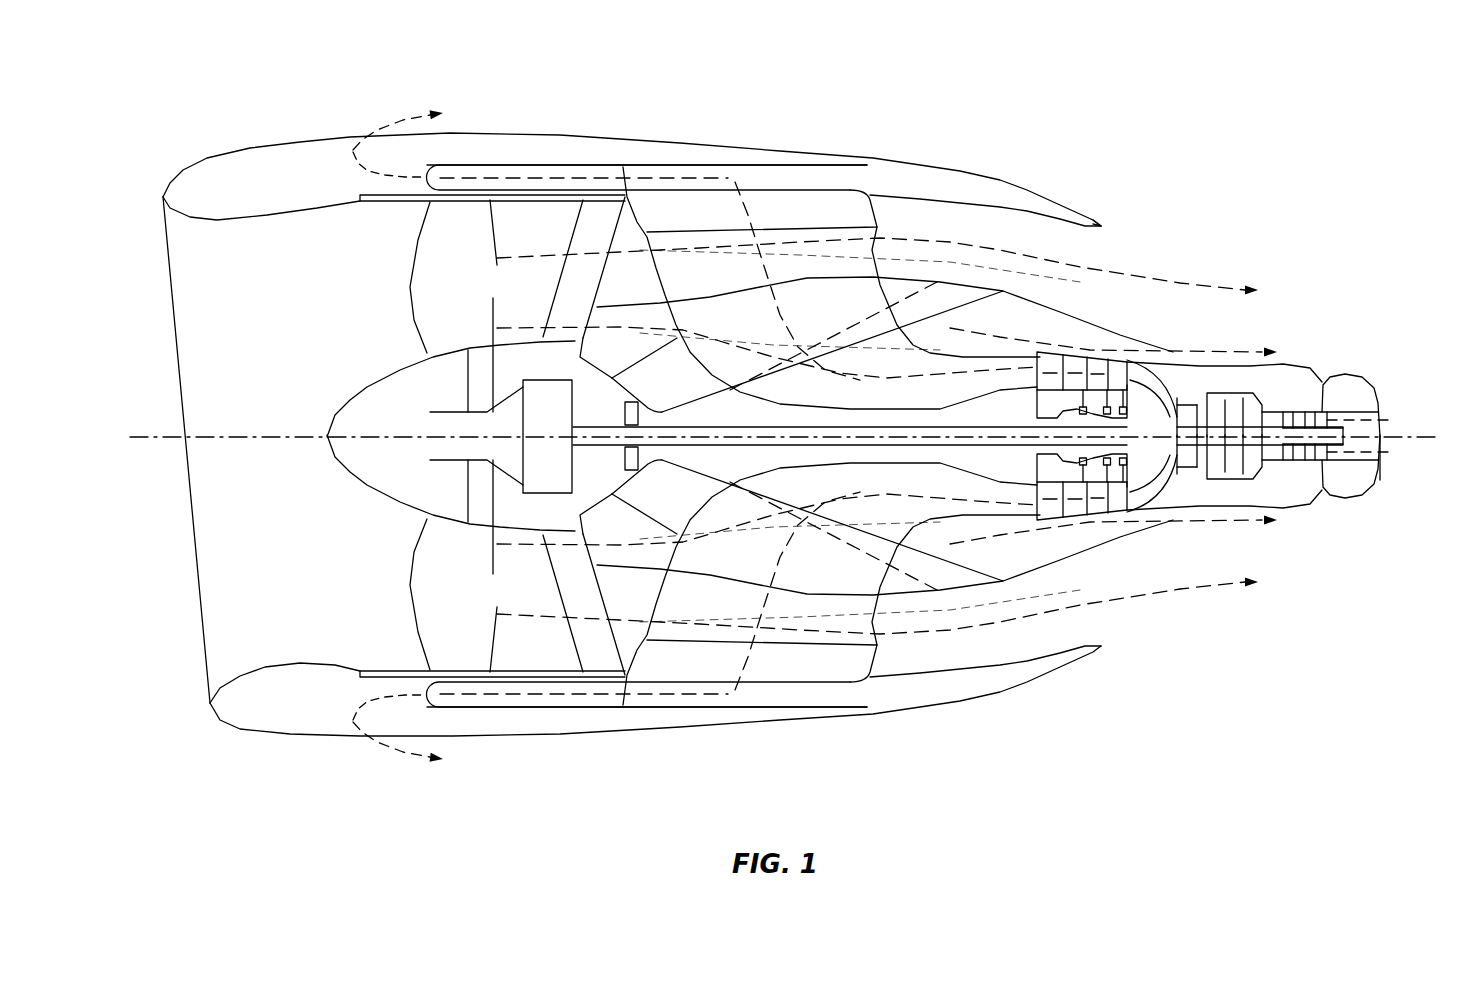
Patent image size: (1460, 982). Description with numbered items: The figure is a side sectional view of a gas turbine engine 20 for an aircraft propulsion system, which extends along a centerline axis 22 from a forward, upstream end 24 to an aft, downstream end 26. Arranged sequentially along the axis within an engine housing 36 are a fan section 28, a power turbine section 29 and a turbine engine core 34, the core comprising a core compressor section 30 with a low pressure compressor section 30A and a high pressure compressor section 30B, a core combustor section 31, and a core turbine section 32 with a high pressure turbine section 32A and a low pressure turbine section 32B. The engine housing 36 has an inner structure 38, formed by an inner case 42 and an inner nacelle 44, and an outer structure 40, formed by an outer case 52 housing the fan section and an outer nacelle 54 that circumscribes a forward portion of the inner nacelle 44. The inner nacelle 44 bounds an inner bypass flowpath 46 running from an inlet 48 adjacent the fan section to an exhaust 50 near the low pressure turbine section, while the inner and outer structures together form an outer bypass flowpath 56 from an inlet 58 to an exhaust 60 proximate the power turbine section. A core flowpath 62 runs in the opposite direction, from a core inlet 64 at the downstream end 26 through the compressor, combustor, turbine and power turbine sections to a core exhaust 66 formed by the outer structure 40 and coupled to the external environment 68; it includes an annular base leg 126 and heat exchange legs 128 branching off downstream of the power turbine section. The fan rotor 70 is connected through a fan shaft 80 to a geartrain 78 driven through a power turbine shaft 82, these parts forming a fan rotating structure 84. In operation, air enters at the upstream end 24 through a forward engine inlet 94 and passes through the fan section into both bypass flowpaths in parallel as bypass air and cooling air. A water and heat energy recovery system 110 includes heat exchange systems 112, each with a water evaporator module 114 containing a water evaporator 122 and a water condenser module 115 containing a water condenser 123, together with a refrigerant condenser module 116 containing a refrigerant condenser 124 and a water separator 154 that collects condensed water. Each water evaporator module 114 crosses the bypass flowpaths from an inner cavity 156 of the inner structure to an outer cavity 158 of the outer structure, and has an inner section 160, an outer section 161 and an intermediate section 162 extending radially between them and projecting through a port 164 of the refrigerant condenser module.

The gas turbine engine 20 is at (205, 118).
The centerline axis 22 is at (135, 450).
The forward upstream end 24 is at (161, 197).
The aft downstream end 26 is at (1380, 392).
The fan section 28 is at (410, 694).
The power turbine section 29 is at (1079, 536).
The core compressor section 30 is at (1372, 585).
The low pressure compressor section 30A is at (1322, 487).
The high pressure compressor section 30B is at (1273, 480).
The core combustor section 31 is at (1236, 492).
The core turbine section 32 is at (1258, 640).
The high pressure turbine section 32A is at (1201, 490).
The low pressure turbine section 32B is at (1184, 490).
The turbine engine core 34 is at (1297, 385).
The engine housing 36 is at (1043, 172).
The housing inner structure 38 is at (1088, 302).
The housing outer structure 40 is at (943, 160).
The inner case 42 is at (1083, 352).
The inner nacelle 44 is at (1040, 297).
The inner bypass flowpath 46 is at (990, 330).
The inner bypass inlet 48 is at (597, 318).
The inner bypass exhaust 50 is at (1180, 348).
The outer case 52 is at (373, 186).
The outer nacelle 54 is at (277, 145).
The outer bypass flowpath 56 is at (925, 232).
The outer bypass inlet 58 is at (597, 248).
The outer bypass exhaust 60 is at (1100, 245).
The core flowpath 62 is at (1178, 390).
The core inlet 64 is at (1393, 410).
The core exhaust 66 is at (353, 150).
The environment 68 is at (649, 104).
The fan rotor 70 is at (465, 493).
The geartrain 78 is at (535, 419).
The fan shaft 80 is at (488, 470).
The power turbine shaft 82 is at (590, 450).
The fan rotating structure 84 is at (405, 408).
The forward engine inlet 94 is at (175, 320).
The water and heat energy recovery system 110 is at (878, 696).
The heat exchange system 112 is at (875, 180).
The water evaporator module 114 is at (523, 436).
The water evaporator 122 is at (597, 290).
The water condenser module 115 is at (647, 435).
The water condenser 123 is at (745, 155).
The refrigerant condenser module 116 is at (474, 436).
The refrigerant condenser 124 is at (615, 363).
The base leg 126 is at (1348, 374).
The heat exchange leg 128 is at (890, 378).
The water separator 154 is at (525, 163).
The inner cavity 156 is at (989, 417).
The outer cavity 158 is at (907, 180).
The inner section 160 is at (910, 333).
The outer section 161 is at (800, 185).
The intermediate section 162 is at (890, 253).
The port 164 is at (678, 362).